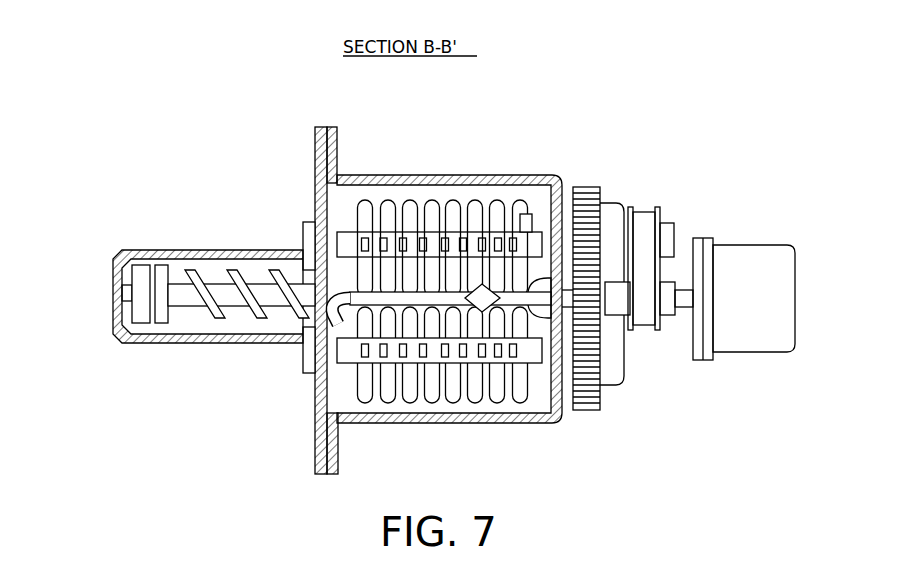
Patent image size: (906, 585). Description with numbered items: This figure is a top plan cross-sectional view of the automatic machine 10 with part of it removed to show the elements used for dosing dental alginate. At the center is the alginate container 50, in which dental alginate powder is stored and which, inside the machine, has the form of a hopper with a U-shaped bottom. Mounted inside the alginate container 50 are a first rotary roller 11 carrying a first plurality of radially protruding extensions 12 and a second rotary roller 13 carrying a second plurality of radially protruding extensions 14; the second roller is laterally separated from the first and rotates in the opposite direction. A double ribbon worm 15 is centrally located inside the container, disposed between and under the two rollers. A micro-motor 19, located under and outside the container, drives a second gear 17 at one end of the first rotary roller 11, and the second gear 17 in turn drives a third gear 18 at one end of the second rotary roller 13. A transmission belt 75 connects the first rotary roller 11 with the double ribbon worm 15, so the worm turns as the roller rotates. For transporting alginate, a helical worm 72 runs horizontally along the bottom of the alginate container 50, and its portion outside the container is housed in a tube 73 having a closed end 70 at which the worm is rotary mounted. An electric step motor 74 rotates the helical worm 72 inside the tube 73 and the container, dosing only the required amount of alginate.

The automatic machine 10 is at (207, 102).
The alginate container 50 is at (407, 176).
The first rotary roller 11 is at (347, 245).
The first plurality of radially protruding extensions 12 is at (502, 200).
The second rotary roller 13 is at (537, 358).
The second plurality of radially protruding extensions 14 is at (407, 400).
The double ribbon worm 15 is at (328, 320).
The micro-motor 19 is at (533, 214).
The second gear 17 is at (585, 186).
The third gear 18 is at (602, 402).
The transmission belt 75 is at (645, 208).
The motor 74 is at (757, 309).
The tube 73 is at (147, 345).
The closed end 70 is at (118, 292).
The helical worm 72 is at (255, 285).